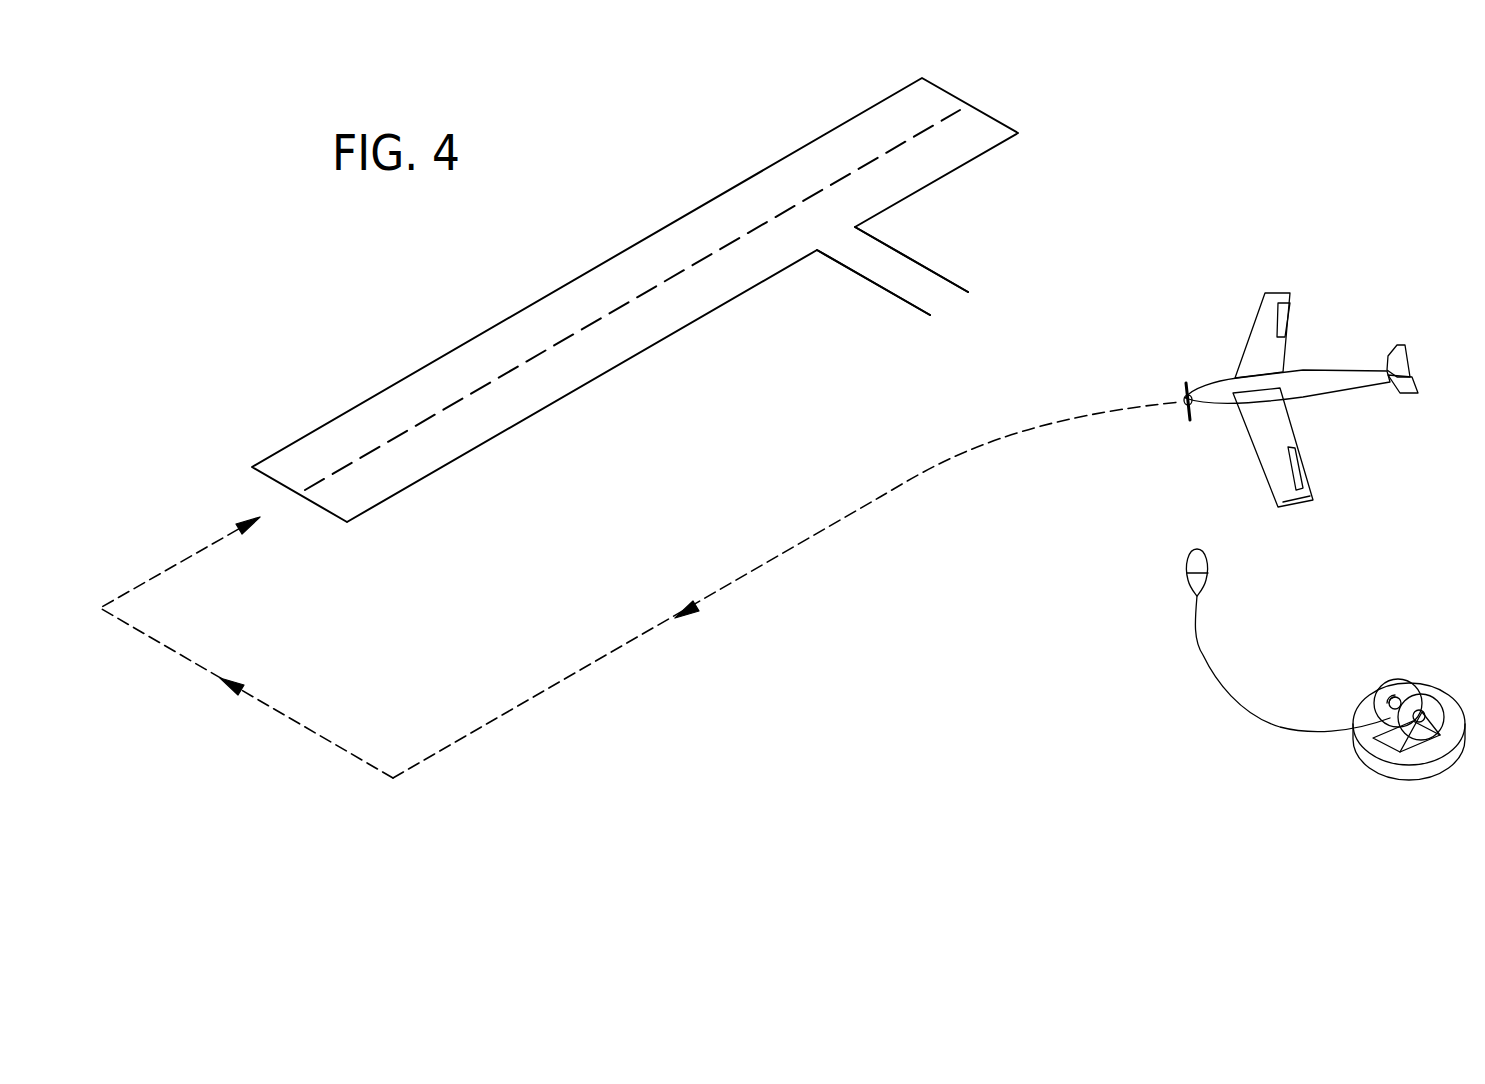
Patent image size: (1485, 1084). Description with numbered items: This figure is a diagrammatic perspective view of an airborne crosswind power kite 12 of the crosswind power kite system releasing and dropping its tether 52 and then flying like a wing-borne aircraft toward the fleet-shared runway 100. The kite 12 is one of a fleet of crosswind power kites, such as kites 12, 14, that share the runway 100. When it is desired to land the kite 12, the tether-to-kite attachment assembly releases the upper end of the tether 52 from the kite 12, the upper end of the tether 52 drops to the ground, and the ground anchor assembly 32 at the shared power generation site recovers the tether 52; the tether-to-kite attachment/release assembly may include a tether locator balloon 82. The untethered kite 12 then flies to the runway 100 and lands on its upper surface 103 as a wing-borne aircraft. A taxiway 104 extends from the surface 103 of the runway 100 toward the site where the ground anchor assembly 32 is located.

The crosswind power kite 12 is at (1412, 336).
The crosswind power kite 14 is at (483, 727).
The ground anchor assembly 32 is at (1397, 677).
The tether 52 is at (1208, 683).
The tether locator balloon 82 is at (1187, 573).
The fleet-shared runway 100 is at (500, 440).
The upper surface 103 is at (592, 350).
The taxiway 104 is at (915, 278).